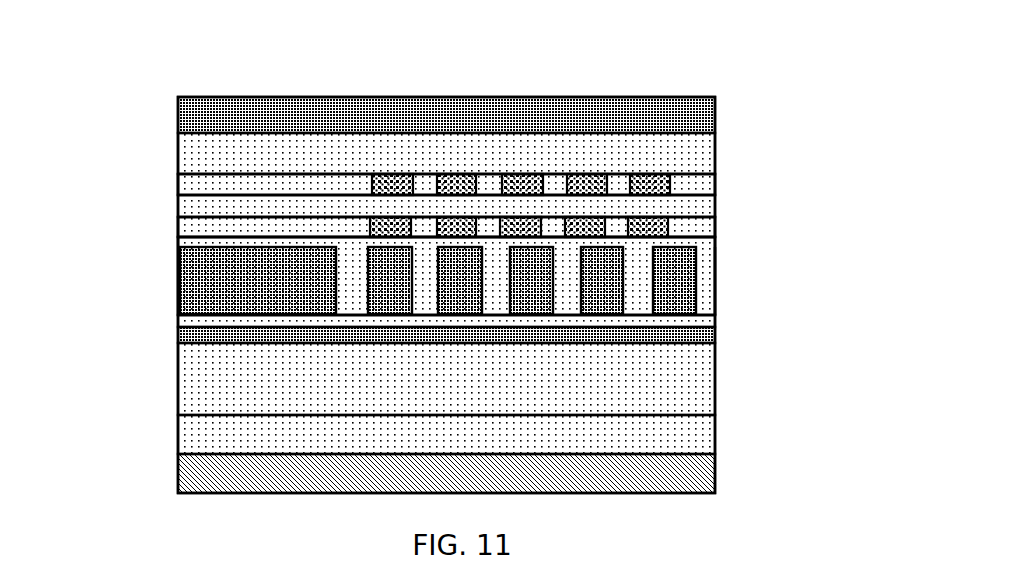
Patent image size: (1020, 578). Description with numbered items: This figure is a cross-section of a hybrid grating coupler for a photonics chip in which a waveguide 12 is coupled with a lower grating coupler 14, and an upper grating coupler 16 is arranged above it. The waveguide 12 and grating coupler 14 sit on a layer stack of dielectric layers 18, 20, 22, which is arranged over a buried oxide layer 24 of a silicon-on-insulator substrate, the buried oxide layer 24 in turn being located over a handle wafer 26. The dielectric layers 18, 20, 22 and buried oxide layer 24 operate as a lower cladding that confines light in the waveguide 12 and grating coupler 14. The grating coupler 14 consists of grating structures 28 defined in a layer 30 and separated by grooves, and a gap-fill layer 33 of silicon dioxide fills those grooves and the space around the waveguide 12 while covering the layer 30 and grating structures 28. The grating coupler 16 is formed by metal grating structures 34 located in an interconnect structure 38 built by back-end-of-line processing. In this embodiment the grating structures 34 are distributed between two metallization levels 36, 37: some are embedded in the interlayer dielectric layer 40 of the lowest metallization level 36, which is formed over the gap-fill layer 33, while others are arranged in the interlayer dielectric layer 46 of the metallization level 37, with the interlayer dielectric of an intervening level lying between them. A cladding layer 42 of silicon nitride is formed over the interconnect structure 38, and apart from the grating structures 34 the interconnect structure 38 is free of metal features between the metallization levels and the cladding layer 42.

The waveguide 12 is at (193, 262).
The grating coupler 14 is at (712, 250).
The grating coupler 16 is at (735, 130).
The dielectric layer 18 is at (698, 392).
The dielectric layer 20 is at (193, 335).
The dielectric layer 22 is at (698, 320).
The buried oxide layer 24 is at (703, 441).
The handle wafer 26 is at (703, 477).
The grating structures 28 is at (690, 290).
The layer 30 is at (170, 287).
The gap-fill layer 33 is at (705, 272).
The grating structures 34 is at (467, 230).
The metallization level 36 is at (170, 224).
The metallization level 37 is at (170, 185).
The interconnect structure 38 is at (120, 149).
The interlayer dielectric layer 40 is at (697, 229).
The cladding layer 42 is at (193, 120).
The interlayer dielectric layer 46 is at (697, 191).